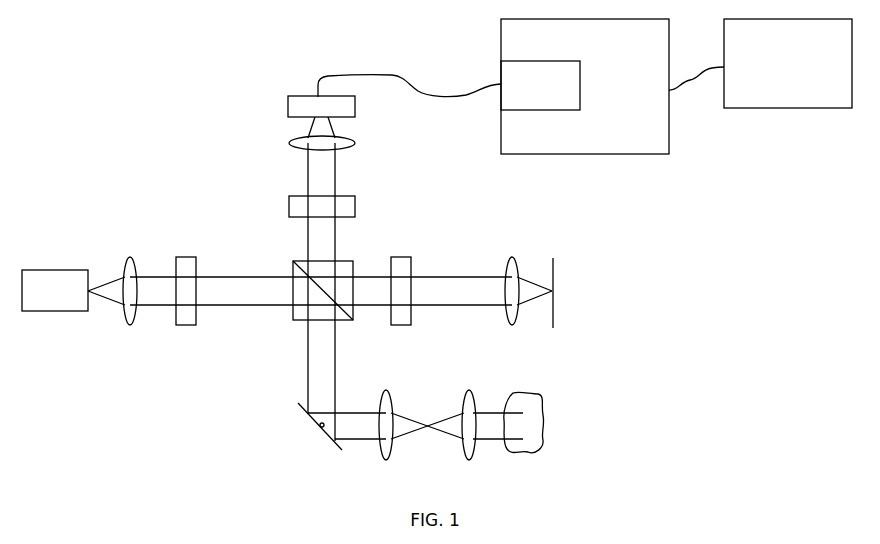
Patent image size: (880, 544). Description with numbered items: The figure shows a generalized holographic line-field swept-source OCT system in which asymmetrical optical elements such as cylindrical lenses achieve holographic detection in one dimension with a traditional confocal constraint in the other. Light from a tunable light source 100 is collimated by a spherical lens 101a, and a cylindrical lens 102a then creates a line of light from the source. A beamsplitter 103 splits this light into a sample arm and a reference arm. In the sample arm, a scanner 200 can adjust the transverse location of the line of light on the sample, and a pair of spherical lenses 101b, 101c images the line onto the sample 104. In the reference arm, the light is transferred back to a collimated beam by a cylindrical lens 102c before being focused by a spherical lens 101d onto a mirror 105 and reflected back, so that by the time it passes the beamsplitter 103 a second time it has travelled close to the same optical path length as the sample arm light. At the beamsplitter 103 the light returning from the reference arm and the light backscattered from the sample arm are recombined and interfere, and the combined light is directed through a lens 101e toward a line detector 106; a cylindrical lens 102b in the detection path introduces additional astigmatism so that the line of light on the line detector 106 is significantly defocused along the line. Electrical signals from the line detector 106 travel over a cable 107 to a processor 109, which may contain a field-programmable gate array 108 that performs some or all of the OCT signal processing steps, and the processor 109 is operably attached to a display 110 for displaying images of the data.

The tunable light source 100 is at (48, 263).
The spherical lens 101a is at (135, 254).
The spherical lens 101b is at (386, 465).
The spherical lens 101c is at (469, 465).
The spherical lens 101d is at (513, 255).
The lens 101e is at (287, 142).
The cylindrical lens 102a is at (192, 247).
The cylindrical lens 102b is at (280, 210).
The cylindrical lens 102c is at (399, 256).
The beamsplitter 103 is at (290, 320).
The sample 104 is at (530, 458).
The mirror 105 is at (553, 255).
The line detector 106 is at (285, 100).
The cable 107 is at (372, 72).
The field-programmable gate array (FPGA) 108 is at (493, 103).
The processor 109 is at (609, 160).
The display 110 is at (787, 117).
The scanner 200 is at (308, 427).